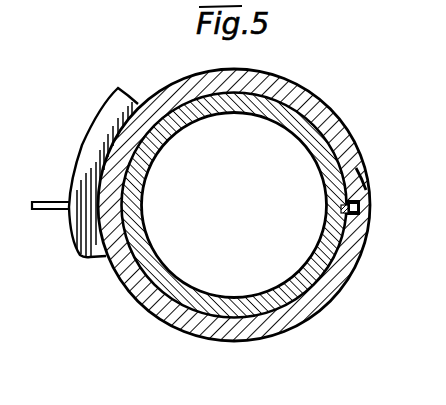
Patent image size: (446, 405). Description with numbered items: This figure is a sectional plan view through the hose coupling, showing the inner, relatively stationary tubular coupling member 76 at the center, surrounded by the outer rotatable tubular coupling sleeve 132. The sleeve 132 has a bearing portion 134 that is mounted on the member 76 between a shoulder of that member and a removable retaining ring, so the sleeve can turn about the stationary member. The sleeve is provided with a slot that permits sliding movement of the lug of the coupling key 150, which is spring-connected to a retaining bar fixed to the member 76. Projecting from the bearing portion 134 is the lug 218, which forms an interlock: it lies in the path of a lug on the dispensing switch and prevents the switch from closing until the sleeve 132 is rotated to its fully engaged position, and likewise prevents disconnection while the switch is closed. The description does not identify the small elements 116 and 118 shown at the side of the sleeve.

The inner tubular coupling member 76 is at (341, 206).
The inner housing element 116 is at (357, 214).
The sensor block 118 is at (362, 206).
The outer rotatable tubular coupling sleeve 132 is at (204, 77).
The bearing portion 134 is at (350, 279).
The coupling key 150 is at (367, 183).
The lug 218 is at (105, 108).